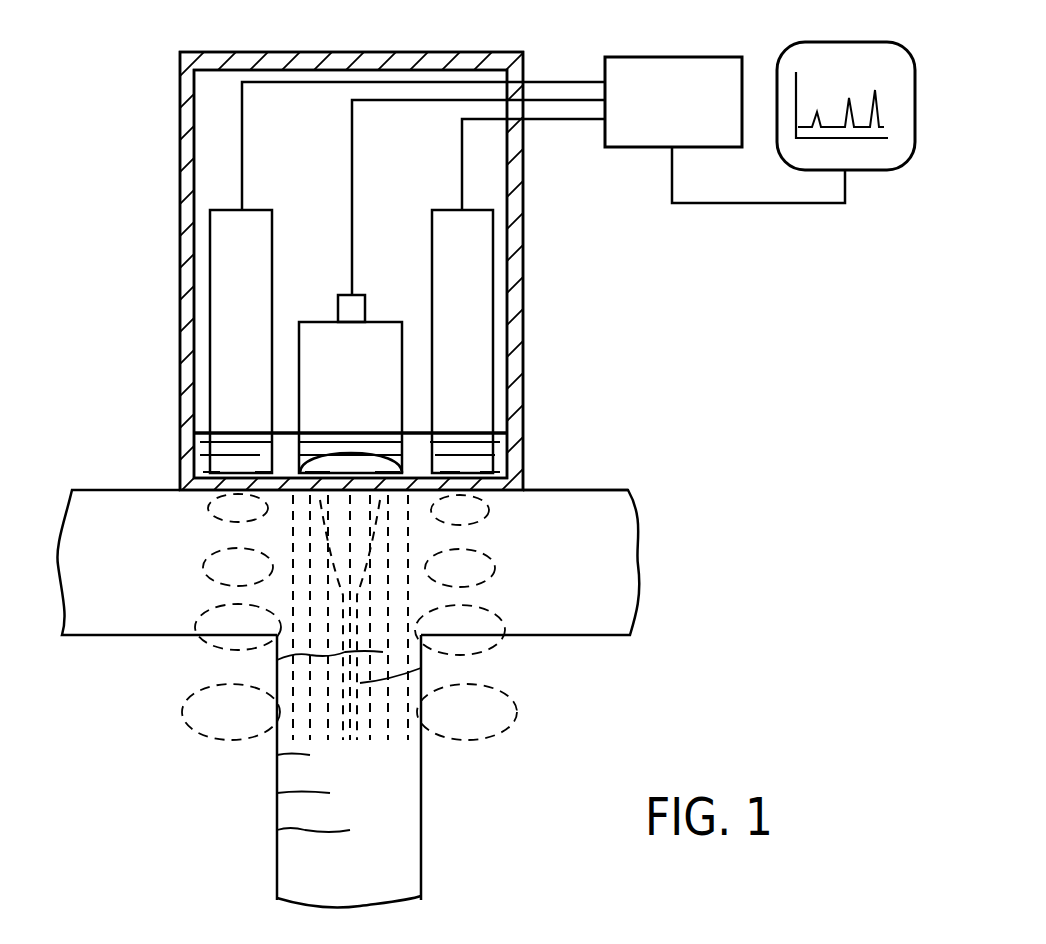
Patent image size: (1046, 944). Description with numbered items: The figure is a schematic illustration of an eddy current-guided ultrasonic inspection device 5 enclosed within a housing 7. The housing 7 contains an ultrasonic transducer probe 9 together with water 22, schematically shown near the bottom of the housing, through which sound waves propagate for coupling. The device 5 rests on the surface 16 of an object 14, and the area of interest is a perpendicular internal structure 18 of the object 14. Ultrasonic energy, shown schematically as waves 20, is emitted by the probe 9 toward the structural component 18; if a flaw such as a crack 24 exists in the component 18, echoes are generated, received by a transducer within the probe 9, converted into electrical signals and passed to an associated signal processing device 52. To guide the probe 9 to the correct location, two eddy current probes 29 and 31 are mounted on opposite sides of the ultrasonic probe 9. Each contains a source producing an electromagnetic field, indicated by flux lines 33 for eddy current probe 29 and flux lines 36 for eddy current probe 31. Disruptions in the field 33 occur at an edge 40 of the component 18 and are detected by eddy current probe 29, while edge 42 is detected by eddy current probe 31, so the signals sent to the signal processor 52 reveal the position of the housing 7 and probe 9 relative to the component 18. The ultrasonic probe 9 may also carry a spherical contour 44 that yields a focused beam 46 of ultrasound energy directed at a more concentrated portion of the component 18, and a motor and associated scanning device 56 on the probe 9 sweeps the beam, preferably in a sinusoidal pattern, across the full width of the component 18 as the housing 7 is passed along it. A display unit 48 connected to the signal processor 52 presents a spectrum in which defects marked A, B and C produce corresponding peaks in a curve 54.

The inspection device 5 is at (534, 375).
The housing 7 is at (180, 250).
The ultrasonic transducer probe 9 is at (299, 356).
The object 14 is at (614, 486).
The surface 16 is at (562, 490).
The internal structure 18 is at (392, 853).
The waves 20 is at (290, 528).
The water 22 is at (412, 447).
The crack 24 is at (277, 660).
The eddy current probe 29 is at (225, 210).
The eddy current probe 31 is at (478, 210).
The flux lines 33 is at (206, 618).
The flux lines 36 is at (490, 617).
The edge 40 is at (277, 862).
The edge 42 is at (423, 790).
The spherical contour 44 is at (365, 453).
The focused beam 46 is at (421, 668).
The display unit 48 is at (800, 45).
The signal processing device 52 is at (678, 57).
The curve 54 is at (806, 97).
The scanning device 56 is at (367, 308).